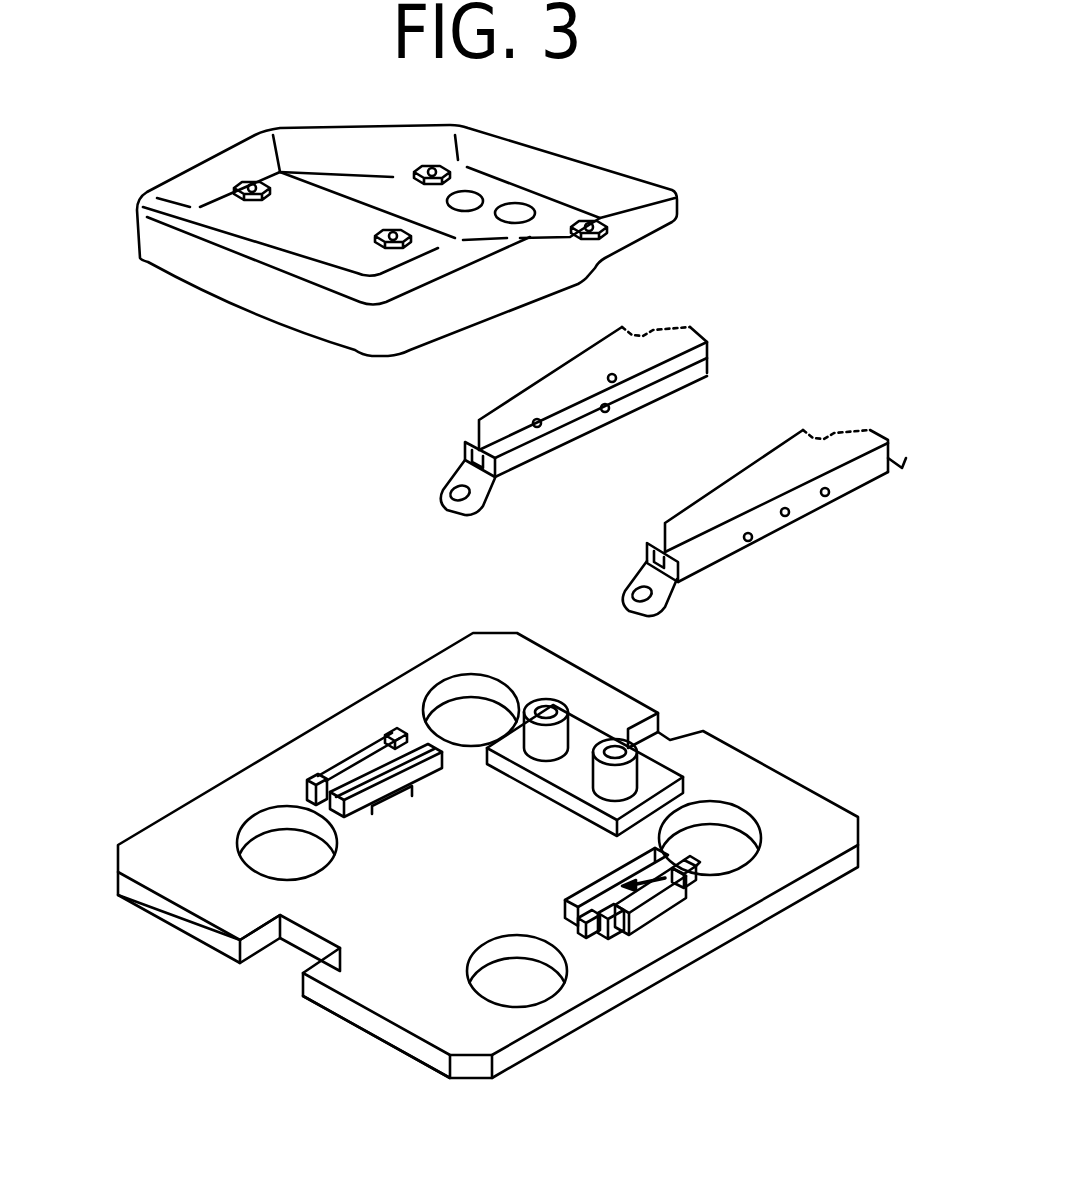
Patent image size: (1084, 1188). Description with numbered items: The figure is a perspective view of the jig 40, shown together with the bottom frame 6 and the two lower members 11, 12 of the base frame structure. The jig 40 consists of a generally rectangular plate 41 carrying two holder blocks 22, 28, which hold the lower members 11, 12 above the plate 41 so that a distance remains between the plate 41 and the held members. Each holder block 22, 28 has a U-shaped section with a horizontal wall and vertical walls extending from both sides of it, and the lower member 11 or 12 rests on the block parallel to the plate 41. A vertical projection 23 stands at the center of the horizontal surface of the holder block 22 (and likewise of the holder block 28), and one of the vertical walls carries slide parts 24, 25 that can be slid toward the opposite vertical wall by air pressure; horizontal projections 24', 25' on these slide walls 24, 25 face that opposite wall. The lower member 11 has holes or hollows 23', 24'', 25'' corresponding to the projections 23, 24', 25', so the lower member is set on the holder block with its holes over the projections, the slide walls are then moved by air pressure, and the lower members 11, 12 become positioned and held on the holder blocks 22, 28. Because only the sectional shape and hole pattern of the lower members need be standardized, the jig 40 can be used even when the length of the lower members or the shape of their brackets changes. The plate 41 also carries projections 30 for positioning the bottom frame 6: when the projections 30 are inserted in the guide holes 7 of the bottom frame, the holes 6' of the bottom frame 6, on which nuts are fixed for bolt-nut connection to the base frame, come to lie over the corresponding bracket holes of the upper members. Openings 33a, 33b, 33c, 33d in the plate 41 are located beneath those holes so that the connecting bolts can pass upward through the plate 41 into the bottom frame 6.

The bottom frame 6 is at (407, 265).
The holes of the bottom frame 6' is at (395, 326).
The holes 7 is at (518, 210).
The lower member 11 is at (870, 467).
The lower member 12 is at (683, 363).
The holder block 22 is at (653, 920).
The vertical projection 23 is at (712, 926).
The hole or hollow 23' is at (698, 505).
The slide part 24 is at (609, 1000).
The horizontal projection 24' is at (552, 1023).
The hole or hollow 24'' is at (625, 520).
The slide part 25 is at (772, 908).
The horizontal projection 25' is at (799, 883).
The hole or hollow 25'' is at (682, 452).
The holder block 28 is at (340, 765).
The projections 30 is at (548, 710).
The opening 33a is at (503, 992).
The opening 33b is at (267, 862).
The opening 33c is at (725, 835).
The opening 33d is at (458, 698).
The jig 40 is at (262, 677).
The plate 41 is at (373, 1003).